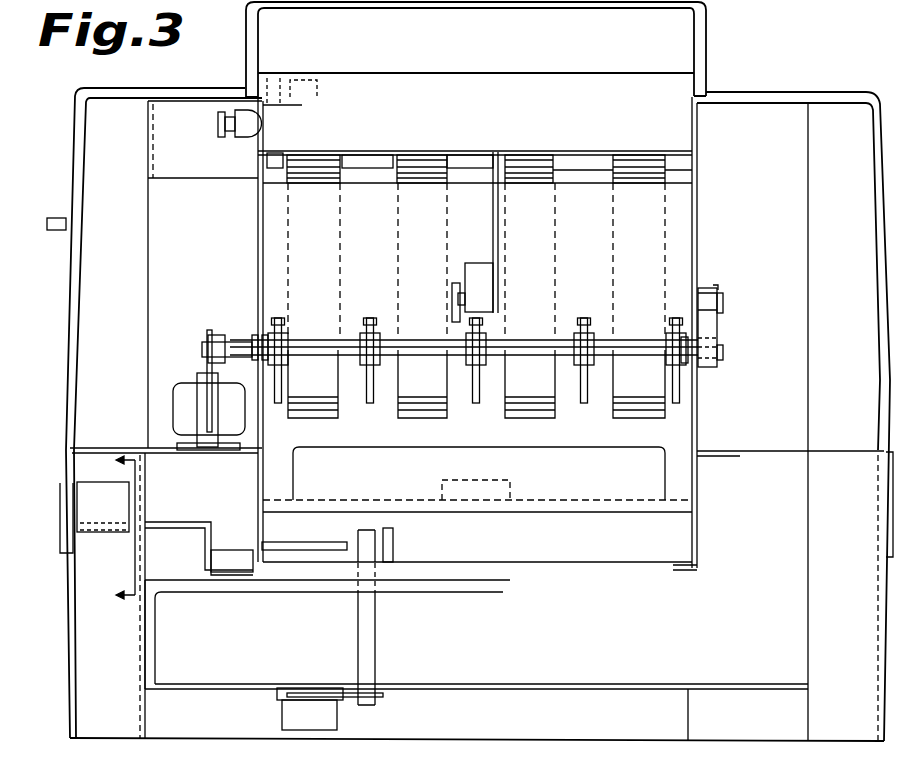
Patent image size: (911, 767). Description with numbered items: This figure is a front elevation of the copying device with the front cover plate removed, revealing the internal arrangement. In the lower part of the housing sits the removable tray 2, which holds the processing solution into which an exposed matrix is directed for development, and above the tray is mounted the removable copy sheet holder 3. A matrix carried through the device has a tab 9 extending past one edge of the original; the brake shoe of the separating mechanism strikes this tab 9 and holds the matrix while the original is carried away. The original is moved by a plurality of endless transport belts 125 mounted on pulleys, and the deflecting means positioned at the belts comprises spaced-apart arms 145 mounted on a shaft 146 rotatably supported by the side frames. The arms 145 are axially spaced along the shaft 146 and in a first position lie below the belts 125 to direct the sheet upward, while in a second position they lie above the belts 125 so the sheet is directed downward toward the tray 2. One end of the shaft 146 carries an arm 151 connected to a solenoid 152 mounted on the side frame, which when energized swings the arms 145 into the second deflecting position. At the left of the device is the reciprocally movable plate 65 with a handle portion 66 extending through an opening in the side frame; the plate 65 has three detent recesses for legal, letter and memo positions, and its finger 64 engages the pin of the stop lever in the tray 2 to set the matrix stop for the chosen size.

The removable tray 2 is at (233, 675).
The removable copy sheet holder 3 is at (597, 564).
The tab 9 is at (116, 529).
The finger 64 is at (232, 563).
The reciprocally movable plate 65 is at (170, 523).
The handle portion 66 is at (62, 497).
The endless transport belts 125 is at (418, 408).
The deflector arms 145 is at (368, 382).
The shaft 146 is at (238, 345).
The arm 151 is at (207, 362).
The solenoid 152 is at (182, 390).